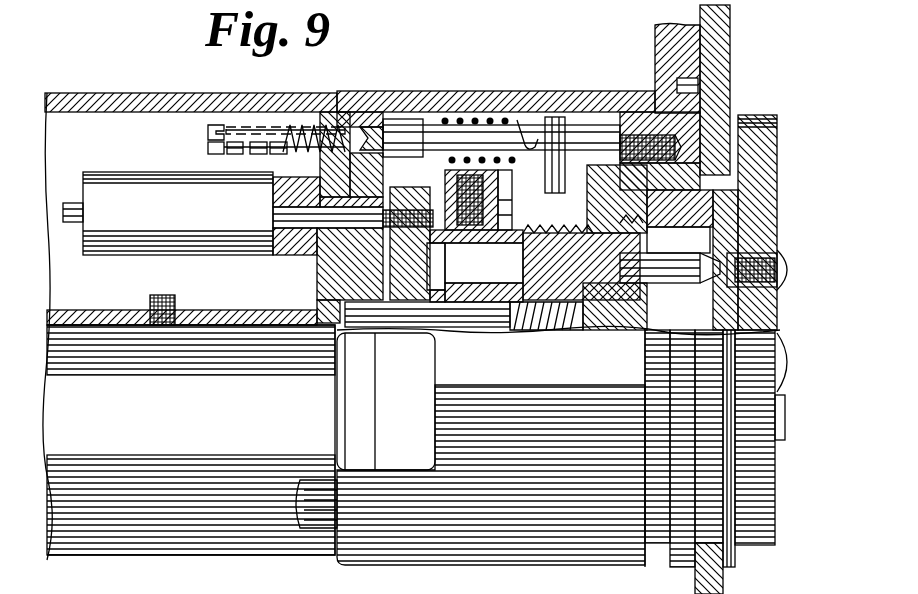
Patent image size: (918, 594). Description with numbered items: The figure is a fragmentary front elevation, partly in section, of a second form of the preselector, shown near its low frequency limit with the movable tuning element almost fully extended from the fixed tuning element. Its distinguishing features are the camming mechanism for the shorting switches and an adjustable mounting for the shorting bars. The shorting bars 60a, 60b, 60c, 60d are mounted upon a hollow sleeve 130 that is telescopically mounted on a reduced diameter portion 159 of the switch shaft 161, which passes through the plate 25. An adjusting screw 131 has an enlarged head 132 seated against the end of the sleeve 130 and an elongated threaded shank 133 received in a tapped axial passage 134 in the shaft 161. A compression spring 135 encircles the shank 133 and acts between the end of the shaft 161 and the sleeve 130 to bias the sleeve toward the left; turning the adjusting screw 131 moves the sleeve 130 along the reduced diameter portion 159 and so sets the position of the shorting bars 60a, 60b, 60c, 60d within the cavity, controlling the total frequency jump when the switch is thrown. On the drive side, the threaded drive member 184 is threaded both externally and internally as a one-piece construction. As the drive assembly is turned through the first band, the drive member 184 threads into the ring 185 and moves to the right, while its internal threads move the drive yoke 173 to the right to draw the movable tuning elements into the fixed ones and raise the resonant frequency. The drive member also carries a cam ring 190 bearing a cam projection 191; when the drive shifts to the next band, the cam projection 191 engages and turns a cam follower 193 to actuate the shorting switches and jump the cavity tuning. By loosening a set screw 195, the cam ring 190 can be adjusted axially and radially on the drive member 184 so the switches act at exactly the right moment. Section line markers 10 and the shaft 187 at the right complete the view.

The section line 10 is at (547, 43).
The plate 25 is at (383, 171).
The shorting bar 60a is at (240, 156).
The shorting bar 60b is at (258, 156).
The shorting bar 60c is at (292, 152).
The shorting bar 60d is at (193, 213).
The hollow sleeve 130 is at (353, 126).
The adjusting screw 131 is at (200, 151).
The enlarged head 132 is at (208, 130).
The threaded shank 133 is at (228, 126).
The tapped axial passage 134 is at (405, 122).
The compression spring 135 is at (316, 137).
The reduced diameter portion 159 is at (372, 122).
The switch shaft 161 is at (449, 135).
The drive yoke 173 is at (478, 300).
The threaded drive member 184 is at (578, 223).
The ring 185 is at (640, 182).
The shaft 187 is at (627, 315).
The cam ring 190 is at (505, 207).
The cam projection 191 is at (505, 179).
The cam follower 193 is at (573, 93).
The set screw 195 is at (468, 243).